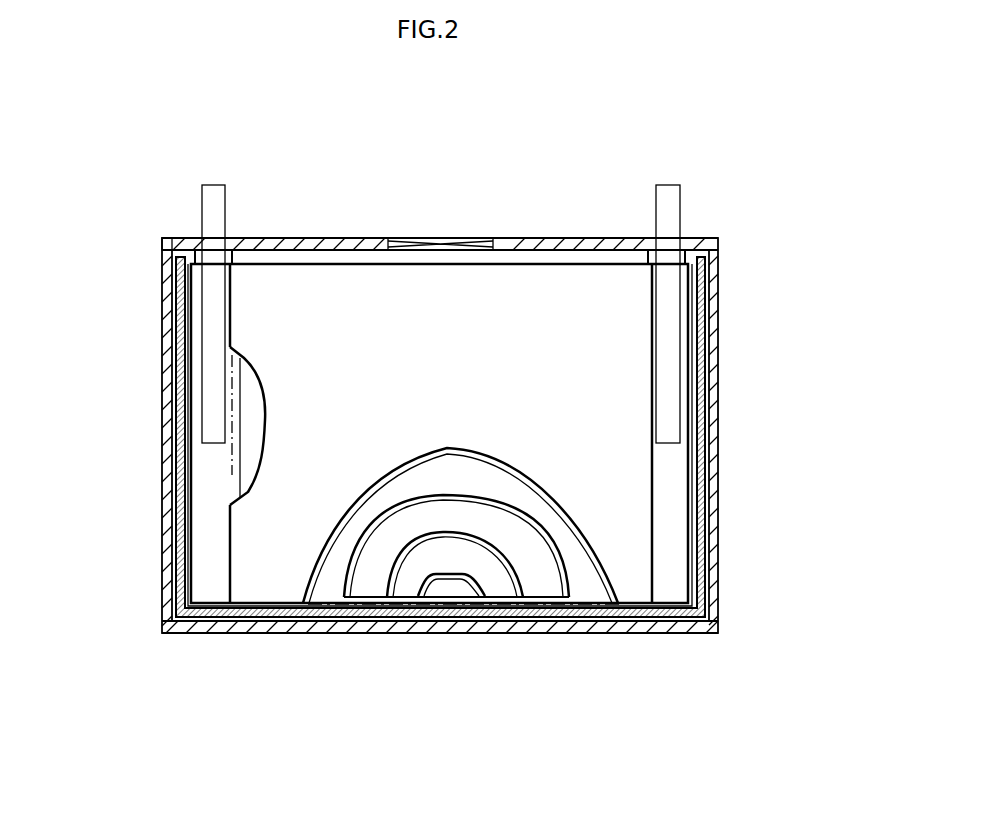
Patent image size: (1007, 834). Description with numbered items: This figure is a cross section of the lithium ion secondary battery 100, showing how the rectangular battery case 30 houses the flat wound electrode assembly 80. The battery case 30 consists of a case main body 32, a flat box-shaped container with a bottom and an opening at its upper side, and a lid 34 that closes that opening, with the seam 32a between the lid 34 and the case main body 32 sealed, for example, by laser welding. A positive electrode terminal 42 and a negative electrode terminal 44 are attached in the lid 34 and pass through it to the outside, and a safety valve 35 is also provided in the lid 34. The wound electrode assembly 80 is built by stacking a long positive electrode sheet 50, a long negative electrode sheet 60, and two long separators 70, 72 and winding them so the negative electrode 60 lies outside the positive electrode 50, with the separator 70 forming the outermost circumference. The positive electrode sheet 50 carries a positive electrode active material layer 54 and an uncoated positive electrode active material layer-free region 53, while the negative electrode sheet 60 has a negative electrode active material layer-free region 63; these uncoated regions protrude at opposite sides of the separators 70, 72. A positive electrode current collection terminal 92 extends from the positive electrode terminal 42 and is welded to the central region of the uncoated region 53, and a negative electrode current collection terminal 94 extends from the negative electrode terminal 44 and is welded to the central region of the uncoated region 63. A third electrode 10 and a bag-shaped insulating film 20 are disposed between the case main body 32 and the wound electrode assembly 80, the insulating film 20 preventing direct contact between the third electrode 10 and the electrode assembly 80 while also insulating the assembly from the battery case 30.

The lithium ion secondary battery 100 is at (720, 200).
The third electrode 10 is at (170, 328).
The insulating film 20 is at (170, 485).
The battery case 30 is at (722, 363).
The case main body 32 is at (720, 610).
The seam 32a is at (158, 248).
The lid 34 is at (613, 238).
The safety valve 35 is at (441, 240).
The positive electrode terminal 42 is at (213, 188).
The negative electrode terminal 44 is at (667, 188).
The positive electrode sheet 50 is at (328, 590).
The positive electrode active material layer-free region 53 is at (207, 578).
The positive electrode active material layer 54 is at (255, 395).
The negative electrode sheet 60 is at (402, 583).
The negative electrode active material layer-free region 63 is at (677, 477).
The separator 70 is at (267, 535).
The separator 72 is at (370, 587).
The wound electrode assembly 80 is at (325, 292).
The positive electrode current collection terminal 92 is at (210, 378).
The negative electrode current collection terminal 94 is at (668, 400).